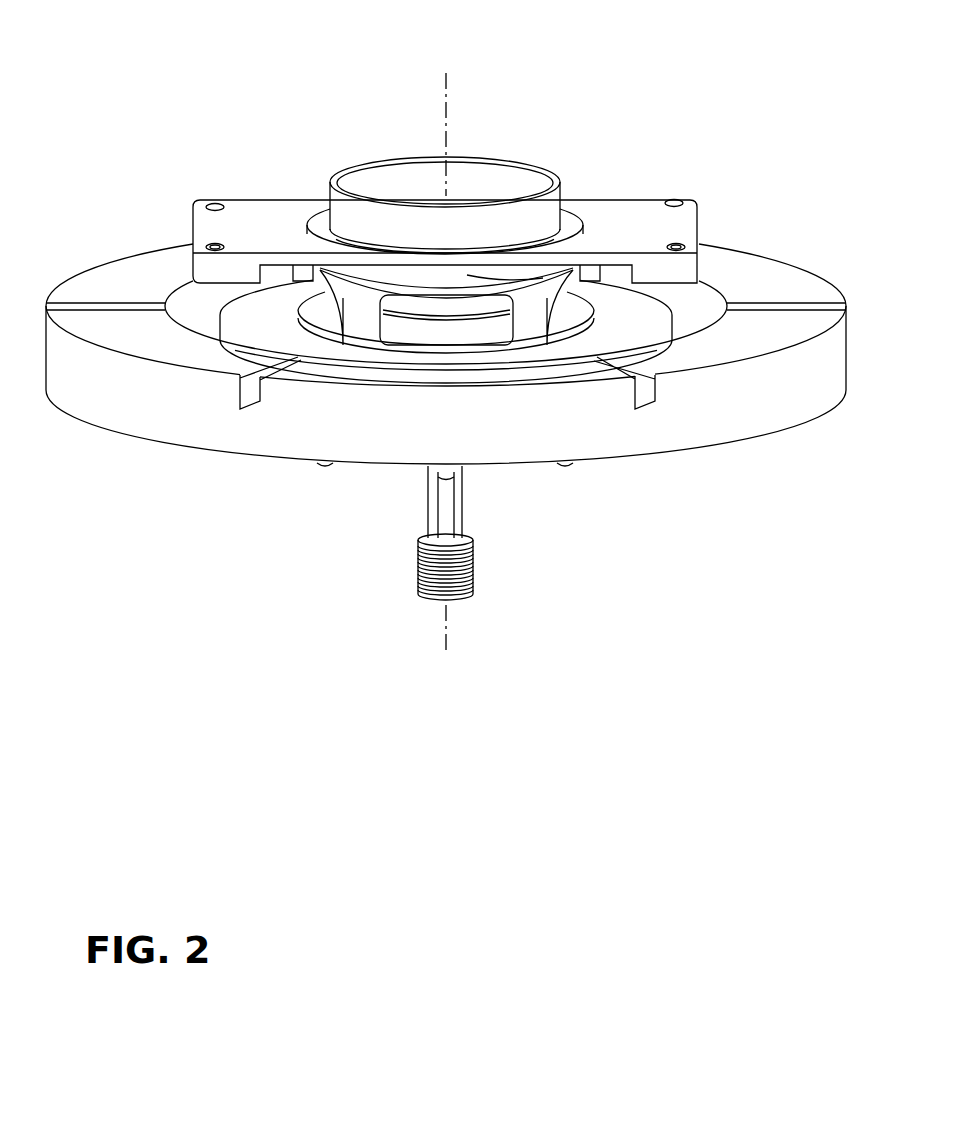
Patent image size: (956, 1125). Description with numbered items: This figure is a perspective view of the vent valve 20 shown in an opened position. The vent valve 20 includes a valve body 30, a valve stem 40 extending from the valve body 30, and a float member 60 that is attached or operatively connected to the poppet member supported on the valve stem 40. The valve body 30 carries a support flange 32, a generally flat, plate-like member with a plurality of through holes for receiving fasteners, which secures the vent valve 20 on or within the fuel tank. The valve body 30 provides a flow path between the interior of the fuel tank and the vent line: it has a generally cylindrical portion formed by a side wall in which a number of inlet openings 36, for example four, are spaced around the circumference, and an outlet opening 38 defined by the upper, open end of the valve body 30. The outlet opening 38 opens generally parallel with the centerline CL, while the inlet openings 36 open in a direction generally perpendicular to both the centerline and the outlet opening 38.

The vent valve 20 is at (577, 71).
The valve body 30 is at (356, 167).
The support flange 32 is at (683, 219).
The inlet openings 36 is at (560, 314).
The outlet opening 38 is at (507, 183).
The valve stem 40 is at (447, 515).
The float member 60 is at (765, 268).